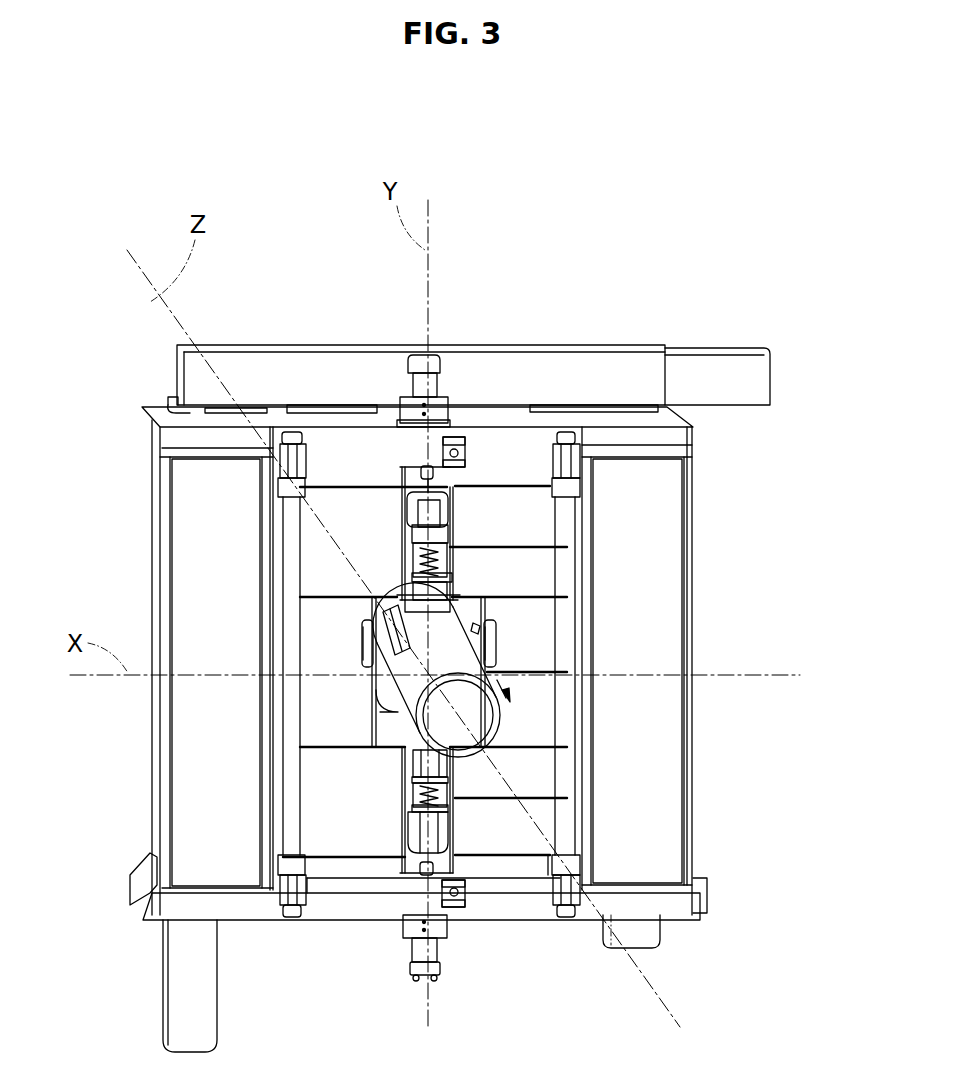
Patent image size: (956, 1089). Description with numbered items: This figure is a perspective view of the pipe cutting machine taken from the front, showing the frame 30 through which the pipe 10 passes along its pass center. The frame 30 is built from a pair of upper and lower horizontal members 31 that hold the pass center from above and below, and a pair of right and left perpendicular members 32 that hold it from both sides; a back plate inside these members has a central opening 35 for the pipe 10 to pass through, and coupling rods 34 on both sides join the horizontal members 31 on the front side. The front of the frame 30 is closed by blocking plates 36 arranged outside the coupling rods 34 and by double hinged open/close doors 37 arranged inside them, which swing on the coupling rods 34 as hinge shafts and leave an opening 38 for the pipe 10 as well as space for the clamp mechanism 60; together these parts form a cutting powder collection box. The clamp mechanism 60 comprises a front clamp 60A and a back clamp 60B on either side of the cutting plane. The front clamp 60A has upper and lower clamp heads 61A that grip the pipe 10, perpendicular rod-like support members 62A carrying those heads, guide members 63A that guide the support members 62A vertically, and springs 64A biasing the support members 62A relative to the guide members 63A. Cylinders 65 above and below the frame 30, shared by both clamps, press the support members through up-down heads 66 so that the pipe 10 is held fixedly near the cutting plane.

The pipe 10 is at (482, 690).
The frame 30 is at (148, 480).
The horizontal member 31 is at (507, 436).
The perpendicular member 32 is at (153, 734).
The coupling rod 34 is at (288, 542).
The opening 35 is at (188, 611).
The blocking plate 36 is at (370, 870).
The open/close door 37 is at (505, 862).
The opening 38 is at (450, 595).
The clamp mechanism 60 is at (403, 283).
The front clamp 60A is at (372, 598).
The back clamp 60B is at (393, 643).
The clamp head 61A is at (522, 635).
The support member 62A is at (467, 558).
The guide member 63A is at (450, 560).
The spring 64A is at (475, 533).
The cylinder 65 is at (445, 378).
The up-down head 66 is at (460, 433).